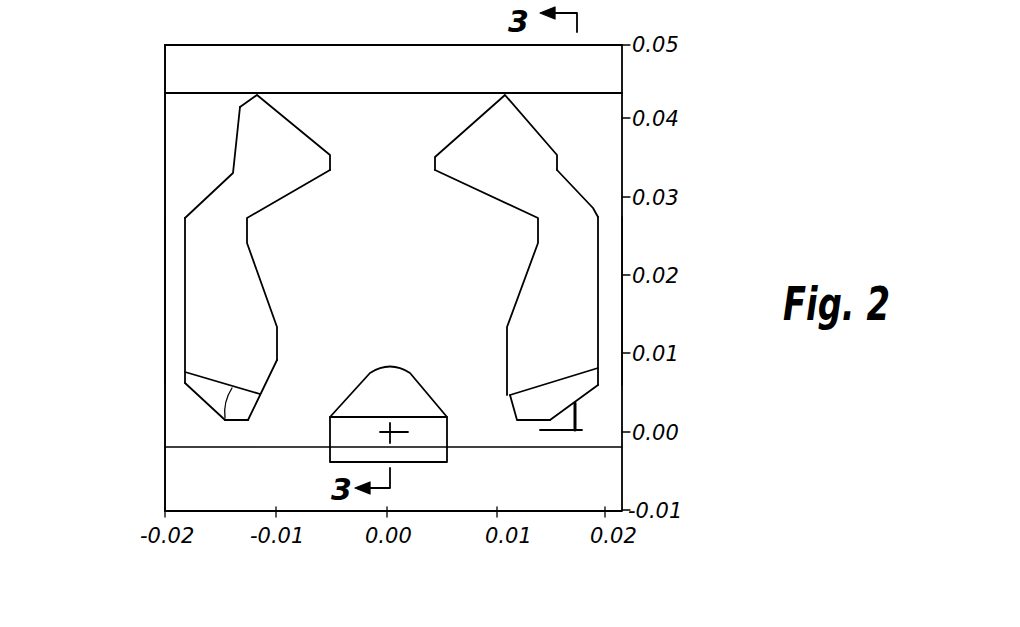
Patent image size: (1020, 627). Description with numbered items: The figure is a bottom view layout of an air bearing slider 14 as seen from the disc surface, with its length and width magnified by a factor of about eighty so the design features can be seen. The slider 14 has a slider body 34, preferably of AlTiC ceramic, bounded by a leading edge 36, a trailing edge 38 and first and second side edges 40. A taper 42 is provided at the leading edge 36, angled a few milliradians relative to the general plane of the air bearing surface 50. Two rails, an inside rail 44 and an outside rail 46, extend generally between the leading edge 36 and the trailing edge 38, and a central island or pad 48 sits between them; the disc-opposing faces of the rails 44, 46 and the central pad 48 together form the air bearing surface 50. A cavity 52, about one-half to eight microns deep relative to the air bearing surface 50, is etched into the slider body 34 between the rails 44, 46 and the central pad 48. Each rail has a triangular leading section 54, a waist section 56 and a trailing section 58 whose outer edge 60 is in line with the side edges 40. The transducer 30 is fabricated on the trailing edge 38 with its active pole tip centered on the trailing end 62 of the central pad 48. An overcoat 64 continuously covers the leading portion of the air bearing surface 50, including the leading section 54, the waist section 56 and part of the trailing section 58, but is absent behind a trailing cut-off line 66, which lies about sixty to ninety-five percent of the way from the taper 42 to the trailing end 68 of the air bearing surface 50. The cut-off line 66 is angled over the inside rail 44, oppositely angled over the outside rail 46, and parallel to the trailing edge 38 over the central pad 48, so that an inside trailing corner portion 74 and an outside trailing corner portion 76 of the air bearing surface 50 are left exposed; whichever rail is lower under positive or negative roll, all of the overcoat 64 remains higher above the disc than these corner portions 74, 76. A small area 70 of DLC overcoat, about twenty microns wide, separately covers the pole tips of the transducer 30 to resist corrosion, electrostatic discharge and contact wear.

The slider 14 is at (142, 99).
The transducer 30 is at (440, 462).
The slider body 34 is at (163, 157).
The leading edge 36 is at (352, 43).
The trailing edge 38 is at (232, 420).
The first and second side edges 40 is at (162, 277).
The taper 42 is at (257, 62).
The inside rail 44 is at (192, 307).
The outside rail 46 is at (587, 228).
The central pad 48 is at (367, 390).
The air bearing surface 50 is at (566, 322).
The cavity 52 is at (398, 252).
The leading section 54 is at (252, 108).
The waist section 56 is at (220, 198).
The trailing section 58 is at (208, 355).
The outer edge 60 is at (183, 335).
The trailing end 62 is at (340, 432).
The overcoat 64 is at (200, 242).
The trailing cut-off line 66 is at (223, 420).
The trailing end of the air bearing surface 68 is at (538, 404).
The small area of overcoat 70 is at (392, 443).
The inside trailing corner portion 74 is at (214, 400).
The outside trailing corner portion 76 is at (560, 390).